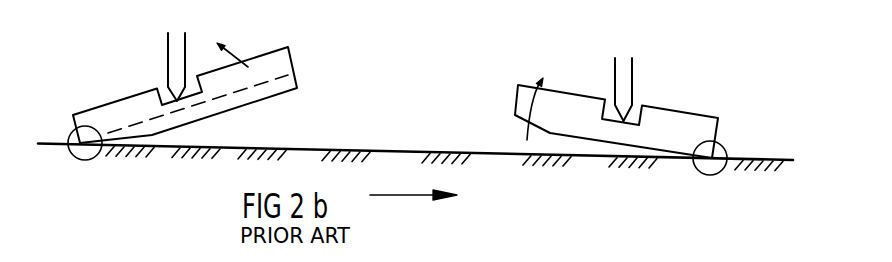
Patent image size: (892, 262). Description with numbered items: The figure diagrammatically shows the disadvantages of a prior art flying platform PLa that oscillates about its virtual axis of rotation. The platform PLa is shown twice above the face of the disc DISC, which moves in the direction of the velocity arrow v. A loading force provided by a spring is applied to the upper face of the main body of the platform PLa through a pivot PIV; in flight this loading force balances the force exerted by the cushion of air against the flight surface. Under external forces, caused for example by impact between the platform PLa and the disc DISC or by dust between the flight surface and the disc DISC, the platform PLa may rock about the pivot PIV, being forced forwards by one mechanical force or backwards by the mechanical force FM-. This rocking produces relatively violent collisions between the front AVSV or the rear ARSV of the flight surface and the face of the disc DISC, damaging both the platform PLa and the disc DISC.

The pivot PIV is at (186, 52).
The platform PLa is at (290, 50).
The front of the flight surface AVSV is at (80, 143).
The rear of the flight surface ARSV is at (297, 88).
The mechanical force forcing the platform backwards FM- is at (549, 97).
The disc DISC is at (498, 157).
The disc velocity direction v is at (418, 175).